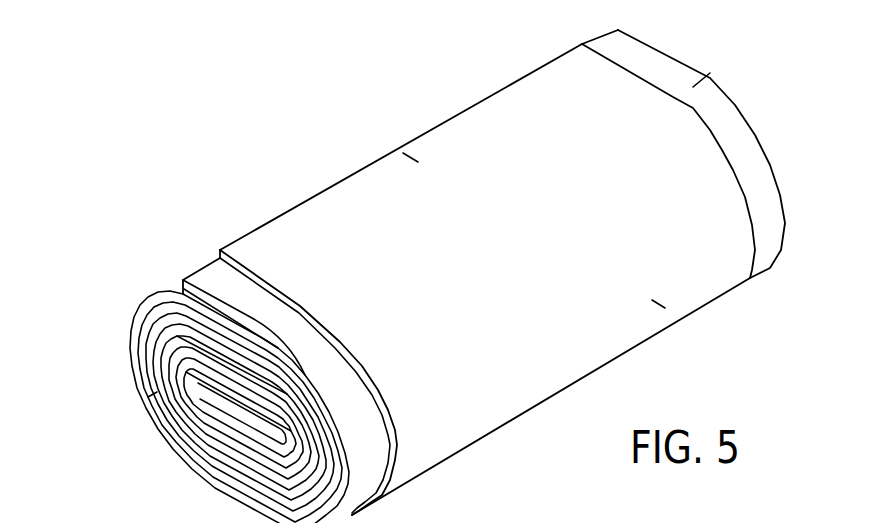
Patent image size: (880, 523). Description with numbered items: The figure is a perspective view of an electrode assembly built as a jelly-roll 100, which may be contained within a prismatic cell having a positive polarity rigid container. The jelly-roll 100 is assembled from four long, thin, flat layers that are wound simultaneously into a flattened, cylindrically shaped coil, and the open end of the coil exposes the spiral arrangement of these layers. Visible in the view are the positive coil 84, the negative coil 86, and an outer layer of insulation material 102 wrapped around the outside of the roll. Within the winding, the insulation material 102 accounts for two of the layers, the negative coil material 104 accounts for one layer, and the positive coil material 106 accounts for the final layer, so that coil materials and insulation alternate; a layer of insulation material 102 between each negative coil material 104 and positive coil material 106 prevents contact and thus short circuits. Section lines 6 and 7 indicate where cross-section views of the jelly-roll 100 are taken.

The jelly-roll 100 is at (437, 262).
The insulation material 102 is at (490, 403).
The negative coil material 104 is at (252, 522).
The positive coil material 106 is at (740, 127).
The positive coil 84 is at (768, 193).
The negative coil 86 is at (195, 447).
The section line 6- 6 is at (383, 140).
The section line 7- 7 is at (727, 70).